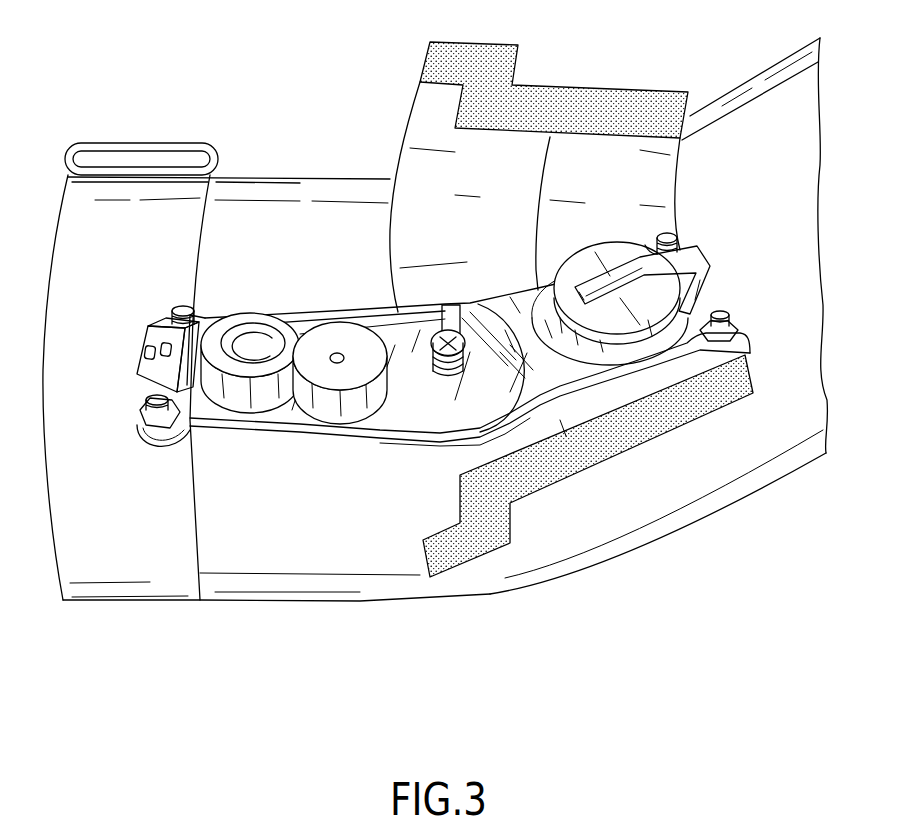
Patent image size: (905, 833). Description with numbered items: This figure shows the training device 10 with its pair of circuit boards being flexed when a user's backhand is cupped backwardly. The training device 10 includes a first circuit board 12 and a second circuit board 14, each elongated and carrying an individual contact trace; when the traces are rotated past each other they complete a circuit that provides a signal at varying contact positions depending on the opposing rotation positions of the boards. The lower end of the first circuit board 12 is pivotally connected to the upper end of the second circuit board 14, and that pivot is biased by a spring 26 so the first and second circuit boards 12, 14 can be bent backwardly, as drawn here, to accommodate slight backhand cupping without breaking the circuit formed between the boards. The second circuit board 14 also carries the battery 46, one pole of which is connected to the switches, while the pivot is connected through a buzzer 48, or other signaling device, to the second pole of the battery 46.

The training device 10 is at (274, 460).
The first circuit board 12 is at (540, 395).
The second circuit board 14 is at (412, 412).
The spring 26 is at (452, 382).
The battery 46 is at (637, 345).
The buzzer 48 is at (335, 418).